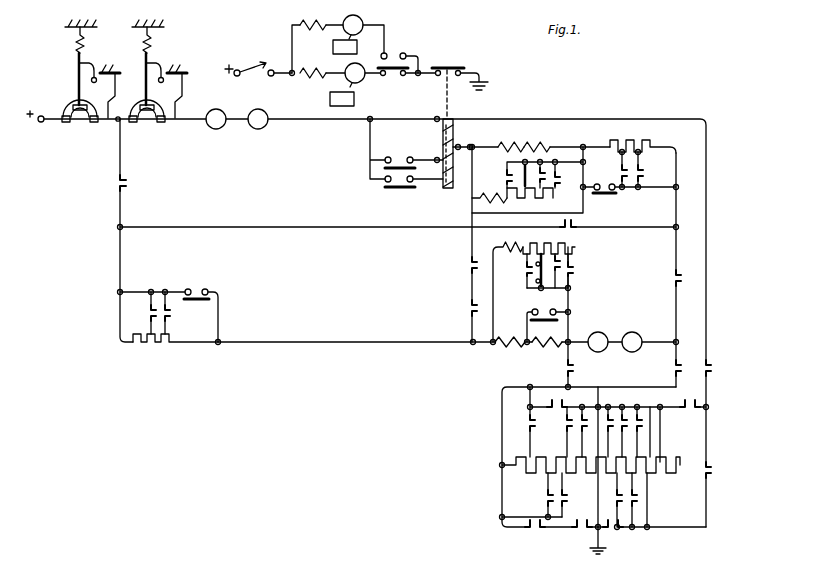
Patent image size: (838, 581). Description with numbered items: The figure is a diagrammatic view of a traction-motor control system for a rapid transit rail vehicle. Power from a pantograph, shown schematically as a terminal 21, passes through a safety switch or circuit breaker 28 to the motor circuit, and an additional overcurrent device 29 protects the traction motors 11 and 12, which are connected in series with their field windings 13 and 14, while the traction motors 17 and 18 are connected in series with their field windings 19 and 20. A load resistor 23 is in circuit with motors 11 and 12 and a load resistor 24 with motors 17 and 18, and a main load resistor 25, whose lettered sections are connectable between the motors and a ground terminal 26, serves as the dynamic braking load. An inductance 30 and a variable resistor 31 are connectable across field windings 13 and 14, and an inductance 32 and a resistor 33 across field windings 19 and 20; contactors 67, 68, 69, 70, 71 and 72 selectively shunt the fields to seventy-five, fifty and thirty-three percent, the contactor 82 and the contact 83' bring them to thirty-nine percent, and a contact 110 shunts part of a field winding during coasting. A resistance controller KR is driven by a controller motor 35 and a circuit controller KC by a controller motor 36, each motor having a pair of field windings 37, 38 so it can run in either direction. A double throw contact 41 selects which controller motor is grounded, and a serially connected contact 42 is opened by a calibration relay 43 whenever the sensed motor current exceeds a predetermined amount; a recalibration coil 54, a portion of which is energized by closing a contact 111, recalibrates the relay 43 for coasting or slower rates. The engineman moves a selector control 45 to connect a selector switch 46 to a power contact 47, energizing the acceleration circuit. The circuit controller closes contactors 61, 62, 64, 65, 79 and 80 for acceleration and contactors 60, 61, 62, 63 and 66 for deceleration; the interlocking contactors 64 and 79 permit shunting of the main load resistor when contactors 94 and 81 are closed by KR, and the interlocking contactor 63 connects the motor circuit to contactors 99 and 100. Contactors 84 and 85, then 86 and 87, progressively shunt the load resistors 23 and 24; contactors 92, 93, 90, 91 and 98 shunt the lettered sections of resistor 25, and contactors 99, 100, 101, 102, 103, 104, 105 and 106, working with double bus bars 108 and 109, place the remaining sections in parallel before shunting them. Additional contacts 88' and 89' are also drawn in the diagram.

The terminal 21 is at (41, 115).
The circuit breaker 28 is at (71, 100).
The overcurrent device 29 is at (140, 105).
The traction motor 11 is at (216, 119).
The traction motor 12 is at (258, 119).
The contactor 61 is at (129, 182).
The selector switch 46 is at (257, 61).
The power contact 47 is at (271, 77).
The controller motor 35 is at (364, 21).
The controller motor 36 is at (360, 81).
The field winding 37 is at (310, 31).
The field winding 38 is at (305, 79).
The double throw contact 41 is at (395, 77).
The contact 42 is at (448, 62).
The calibration relay 43 is at (440, 149).
The recalibration coil 54 is at (446, 187).
The contact 111 is at (392, 162).
The field winding 13 is at (501, 146).
The field winding 14 is at (536, 144).
The load resistor 23 is at (629, 141).
The resistance contactor 86 is at (618, 170).
The contactor 84 is at (644, 169).
The contacts 89' is at (620, 199).
The inductance 30 is at (477, 198).
The variable resistor 31 is at (553, 198).
The contactor 71 is at (506, 177).
The contactor 82 is at (525, 162).
The contactor 69 is at (544, 166).
The contactor 67 is at (558, 179).
The interlocking contactor 79 is at (468, 265).
The contactor 81 is at (469, 309).
The contactor 80 is at (574, 219).
The inductance 32 is at (507, 244).
The resistor 33 is at (564, 243).
The contactor 72 is at (522, 271).
The contact 83' is at (546, 282).
The contactor 70 is at (572, 256).
The contactor 68 is at (576, 272).
The contact 110 is at (560, 322).
The field winding 19 is at (501, 347).
The field winding 20 is at (541, 347).
The traction motor 17 is at (598, 342).
The traction motor 18 is at (632, 342).
The contactor 62 is at (673, 281).
The contactor 65 is at (675, 367).
The deceleration contactor 66 is at (574, 366).
The interlocking contactor 63 is at (713, 368).
The contactor 100 is at (713, 470).
The load resistor 24 is at (154, 347).
The contacts 88' is at (198, 280).
The resistance contactor 87 is at (151, 314).
The contactor 85 is at (171, 316).
The selector control 45 is at (603, 482).
The contactor 98 is at (551, 405).
The contactor 99 is at (689, 410).
The deceleration contactor 60 is at (527, 426).
The contactor 91 is at (564, 426).
The contactor 90 is at (584, 413).
The contactor 105 is at (608, 413).
The contactor 103 is at (623, 413).
The contactor 101 is at (641, 414).
The bus bar 108 is at (673, 434).
The main load resistor 25 is at (534, 456).
The contactor 92 is at (545, 497).
The contactor 93 is at (568, 497).
The contactor 102 is at (639, 498).
The bus bar 109 is at (691, 524).
The interlocking contactor 64 is at (533, 531).
The contactor 94 is at (577, 530).
The contactor 106 is at (611, 529).
The contactor 104 is at (620, 530).
The ground terminal 26 is at (595, 554).